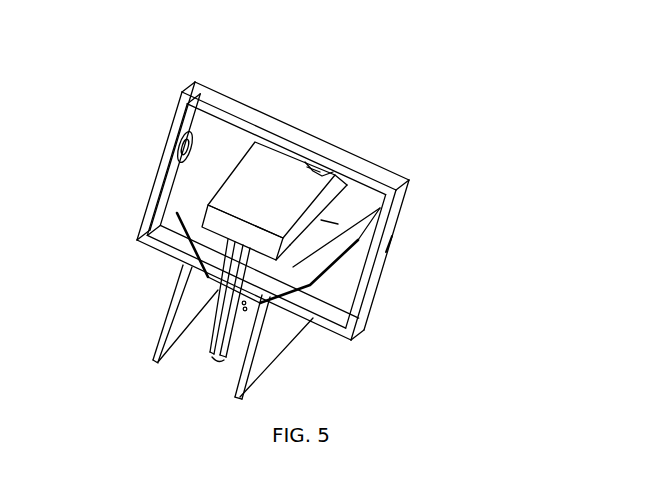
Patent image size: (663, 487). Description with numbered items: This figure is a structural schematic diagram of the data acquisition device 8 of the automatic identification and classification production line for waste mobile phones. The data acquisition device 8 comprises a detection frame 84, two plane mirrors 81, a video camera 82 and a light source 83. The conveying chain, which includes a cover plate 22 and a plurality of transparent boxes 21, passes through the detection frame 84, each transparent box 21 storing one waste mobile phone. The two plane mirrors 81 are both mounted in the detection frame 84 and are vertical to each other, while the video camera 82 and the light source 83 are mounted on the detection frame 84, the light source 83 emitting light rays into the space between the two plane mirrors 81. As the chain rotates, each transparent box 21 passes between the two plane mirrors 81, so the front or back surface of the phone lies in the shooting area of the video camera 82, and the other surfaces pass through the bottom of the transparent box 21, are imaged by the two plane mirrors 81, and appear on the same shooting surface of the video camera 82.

The data acquisition device 8 is at (183, 92).
The transparent box 21 is at (266, 186).
The cover plate 22 is at (182, 310).
The plane mirror 81 is at (322, 245).
The video camera 82 is at (322, 243).
The light source 83 is at (197, 130).
The detection frame 84 is at (390, 243).